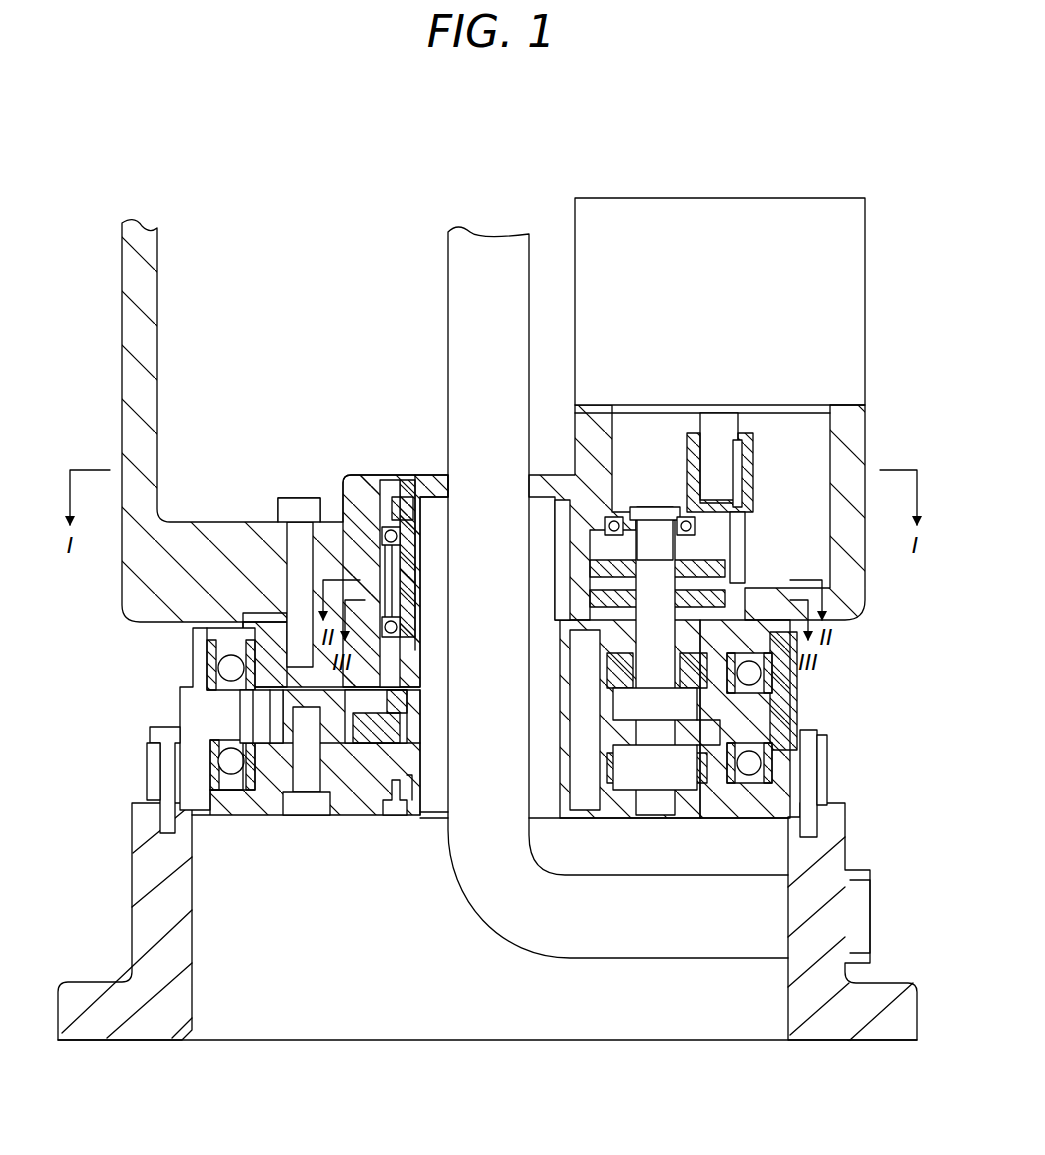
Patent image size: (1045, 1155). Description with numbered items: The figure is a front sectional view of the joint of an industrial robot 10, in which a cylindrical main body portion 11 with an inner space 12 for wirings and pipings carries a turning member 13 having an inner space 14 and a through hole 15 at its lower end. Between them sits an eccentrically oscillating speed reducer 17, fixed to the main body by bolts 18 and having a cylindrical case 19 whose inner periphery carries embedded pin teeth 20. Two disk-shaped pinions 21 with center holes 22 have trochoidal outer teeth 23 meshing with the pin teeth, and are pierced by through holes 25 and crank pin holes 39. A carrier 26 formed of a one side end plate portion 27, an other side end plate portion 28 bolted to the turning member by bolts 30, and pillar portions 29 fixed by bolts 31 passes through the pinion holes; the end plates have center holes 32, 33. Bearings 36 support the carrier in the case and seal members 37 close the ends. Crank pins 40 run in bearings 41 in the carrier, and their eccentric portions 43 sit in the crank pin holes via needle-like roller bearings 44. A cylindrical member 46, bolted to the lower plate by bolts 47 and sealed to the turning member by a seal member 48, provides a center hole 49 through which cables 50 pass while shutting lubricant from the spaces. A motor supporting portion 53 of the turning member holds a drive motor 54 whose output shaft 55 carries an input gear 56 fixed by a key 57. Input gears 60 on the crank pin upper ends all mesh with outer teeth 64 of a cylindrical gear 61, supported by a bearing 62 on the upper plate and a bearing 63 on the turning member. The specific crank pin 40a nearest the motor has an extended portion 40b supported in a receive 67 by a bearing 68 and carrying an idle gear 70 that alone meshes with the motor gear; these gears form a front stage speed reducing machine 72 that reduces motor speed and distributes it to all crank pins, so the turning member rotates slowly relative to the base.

The industrial robot 10 is at (280, 243).
The main body portion 11 is at (140, 886).
The space 12 is at (358, 1042).
The turning member 13 is at (124, 375).
The space 14 is at (183, 330).
The through hole 15 is at (428, 477).
The eccentrically oscillating speed reducer 17 is at (159, 744).
The bolts 18 is at (815, 740).
The case 19 is at (790, 762).
The pin teeth 20 is at (790, 722).
The pinions 21 is at (580, 712).
The center holes 22 is at (392, 702).
The outer teeth 23 is at (252, 815).
The through holes 25 is at (406, 722).
The carrier 26 is at (368, 818).
The one side end plate portion 27 is at (342, 816).
The other side end plate portion 28 is at (263, 545).
The pillar portions 29 is at (192, 698).
The bolts 30 is at (300, 500).
The bolts 31 is at (296, 814).
The center hole 32 is at (413, 795).
The center hole 33 is at (410, 666).
The bearings 36 is at (765, 676).
The seal members 37 is at (748, 640).
The crank pin holes 39 is at (585, 742).
The crank pins 40 is at (657, 800).
The specific crank pin 40a is at (628, 800).
The extended portion 40b is at (656, 525).
The bearings 41 is at (700, 800).
The eccentric portions 43 is at (655, 700).
The needle-like roller bearings 44 is at (608, 696).
The cylindrical member 46 is at (414, 770).
The bolts 47 is at (398, 816).
The seal member 48 is at (572, 512).
The center hole 49 is at (440, 527).
The cables 50 is at (489, 240).
The motor supporting portion 53 is at (858, 427).
The drive motor 54 is at (738, 205).
The output shaft 55 is at (718, 415).
The input gear 56 is at (745, 530).
The key 57 is at (744, 446).
The input gears 60 is at (592, 597).
The cylindrical gear 61 is at (390, 592).
The bearing 62 is at (400, 630).
The bearing 63 is at (400, 538).
The outer teeth 64 is at (404, 556).
The receive 67 is at (716, 515).
The bearing 68 is at (684, 515).
The idle gear 70 is at (600, 570).
The front stage speed reducing machine 72 is at (768, 530).